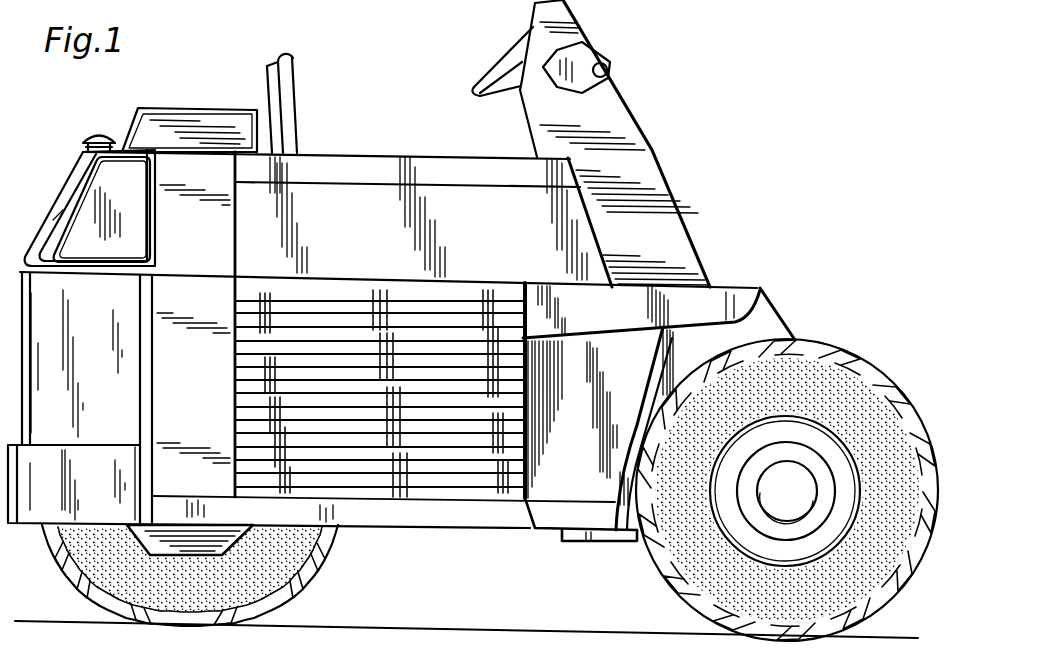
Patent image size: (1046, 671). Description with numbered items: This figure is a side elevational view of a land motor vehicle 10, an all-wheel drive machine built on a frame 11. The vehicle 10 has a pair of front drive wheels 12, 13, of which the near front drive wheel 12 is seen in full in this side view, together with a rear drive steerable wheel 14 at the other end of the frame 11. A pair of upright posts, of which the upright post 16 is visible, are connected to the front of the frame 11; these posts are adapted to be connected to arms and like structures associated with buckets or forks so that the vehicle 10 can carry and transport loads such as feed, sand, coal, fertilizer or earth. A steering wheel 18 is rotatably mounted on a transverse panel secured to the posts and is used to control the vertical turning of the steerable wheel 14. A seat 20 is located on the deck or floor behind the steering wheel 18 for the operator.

The motor vehicle 10 is at (202, 59).
The frame 11 is at (436, 510).
The front drive wheel 12 is at (860, 368).
The front drive wheel 13 is at (466, 646).
The rear drive steerable wheel 14 is at (310, 562).
The upright post 16 is at (617, 102).
The steering wheel 18 is at (508, 60).
The seat 20 is at (297, 66).